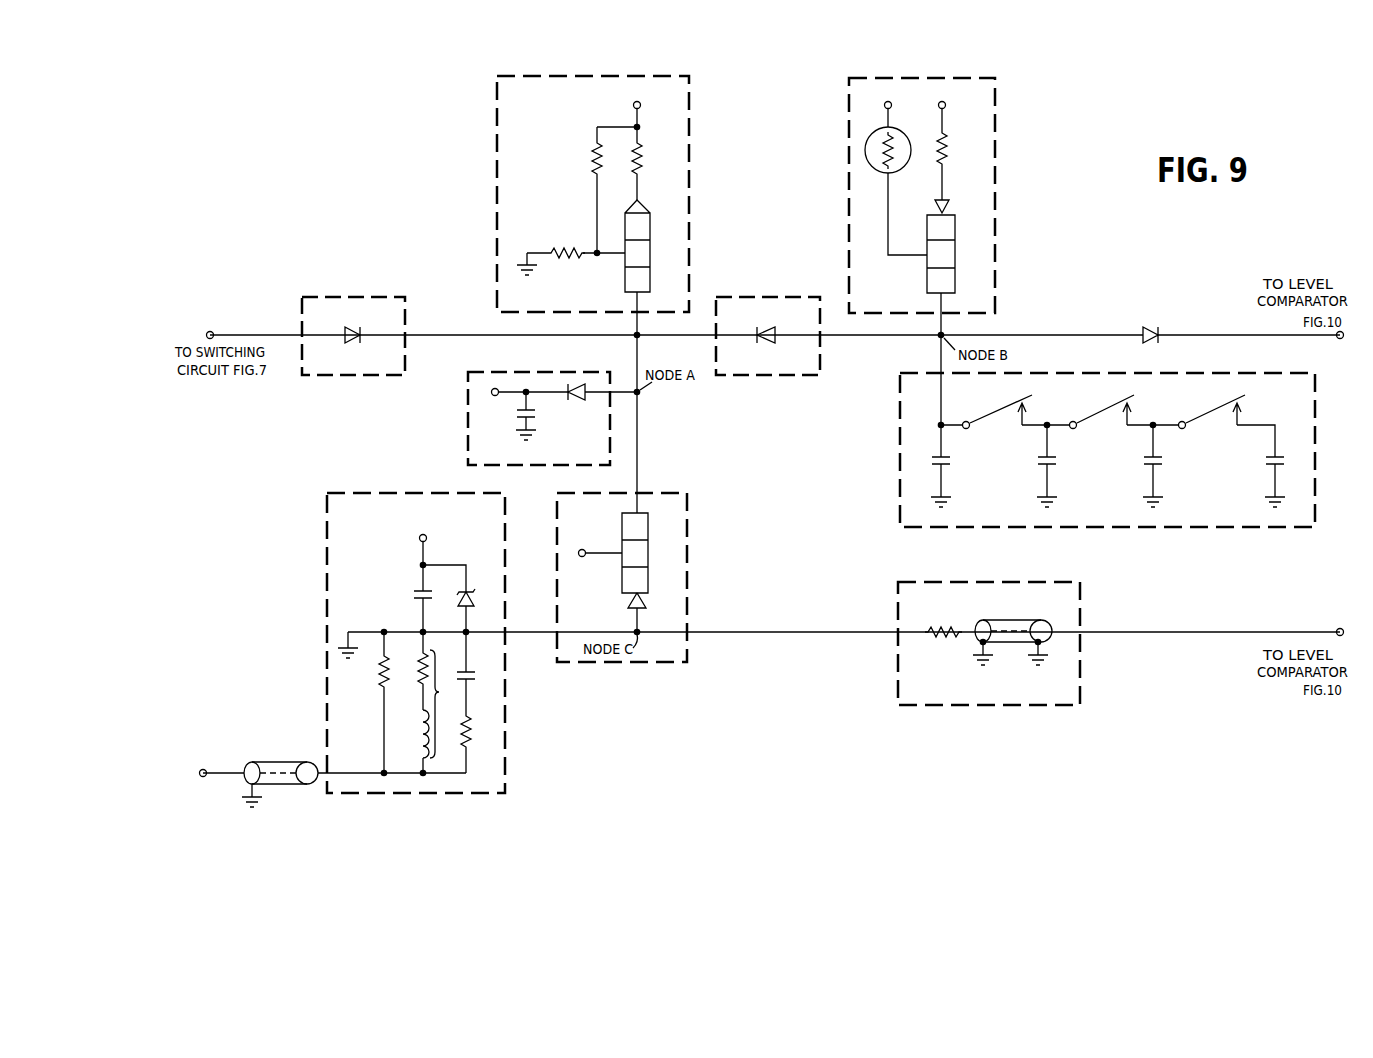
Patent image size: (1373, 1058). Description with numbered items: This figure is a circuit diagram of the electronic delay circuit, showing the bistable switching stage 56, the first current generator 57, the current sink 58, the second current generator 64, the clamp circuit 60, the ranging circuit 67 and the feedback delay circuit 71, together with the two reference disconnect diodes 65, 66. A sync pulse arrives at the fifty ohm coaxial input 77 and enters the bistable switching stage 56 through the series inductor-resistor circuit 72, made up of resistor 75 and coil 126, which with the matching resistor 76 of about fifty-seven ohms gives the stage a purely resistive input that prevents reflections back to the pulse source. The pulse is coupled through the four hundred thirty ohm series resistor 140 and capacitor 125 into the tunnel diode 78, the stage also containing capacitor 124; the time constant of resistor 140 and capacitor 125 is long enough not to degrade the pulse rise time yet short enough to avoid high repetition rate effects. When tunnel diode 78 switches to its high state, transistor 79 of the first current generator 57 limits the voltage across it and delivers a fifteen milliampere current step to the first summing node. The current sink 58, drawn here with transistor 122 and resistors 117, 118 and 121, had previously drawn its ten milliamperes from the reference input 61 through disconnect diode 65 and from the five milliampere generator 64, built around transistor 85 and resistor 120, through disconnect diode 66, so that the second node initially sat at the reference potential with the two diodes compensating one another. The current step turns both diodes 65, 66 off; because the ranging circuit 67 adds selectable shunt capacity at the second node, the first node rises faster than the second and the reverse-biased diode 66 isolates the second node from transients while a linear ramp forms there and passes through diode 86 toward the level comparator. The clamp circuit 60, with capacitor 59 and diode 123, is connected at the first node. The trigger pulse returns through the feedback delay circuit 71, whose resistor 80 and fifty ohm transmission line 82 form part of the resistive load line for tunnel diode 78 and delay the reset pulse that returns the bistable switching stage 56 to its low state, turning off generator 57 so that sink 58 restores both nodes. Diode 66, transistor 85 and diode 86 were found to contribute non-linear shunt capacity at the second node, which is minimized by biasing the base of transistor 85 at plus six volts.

The bistable switching stage 56 is at (365, 666).
The first current generator 57 is at (642, 601).
The current sink 58 is at (566, 181).
The capacitor 59 is at (519, 418).
The clamp circuit 60 is at (531, 406).
The reference input 61 is at (214, 326).
The current generator 64 is at (933, 182).
The disconnect diode 65 is at (351, 330).
The disconnect diode 66 is at (765, 345).
The ranging circuit 67 is at (894, 469).
The feedback delay circuit 71 is at (962, 667).
The series inductor-resistor circuit 72 is at (423, 702).
The resistor 75 is at (418, 657).
The resistor 76 is at (381, 681).
The coaxial input 77 is at (253, 762).
The tunnel diode 78 is at (474, 599).
The transistor 79 is at (643, 553).
The resistor 80 is at (941, 640).
The transmission line 82 is at (996, 620).
The transistor 85 is at (935, 258).
The diode 86 is at (1148, 329).
The resistor 117 is at (595, 160).
The resistor 118 is at (643, 160).
The resistor 120 is at (948, 152).
The resistor 121 is at (563, 250).
The transistor 122 is at (646, 253).
The diode 123 is at (576, 401).
The capacitor 124 is at (418, 586).
The capacitor 125 is at (469, 680).
The coil 126 is at (418, 732).
The series resistor 140 is at (470, 741).